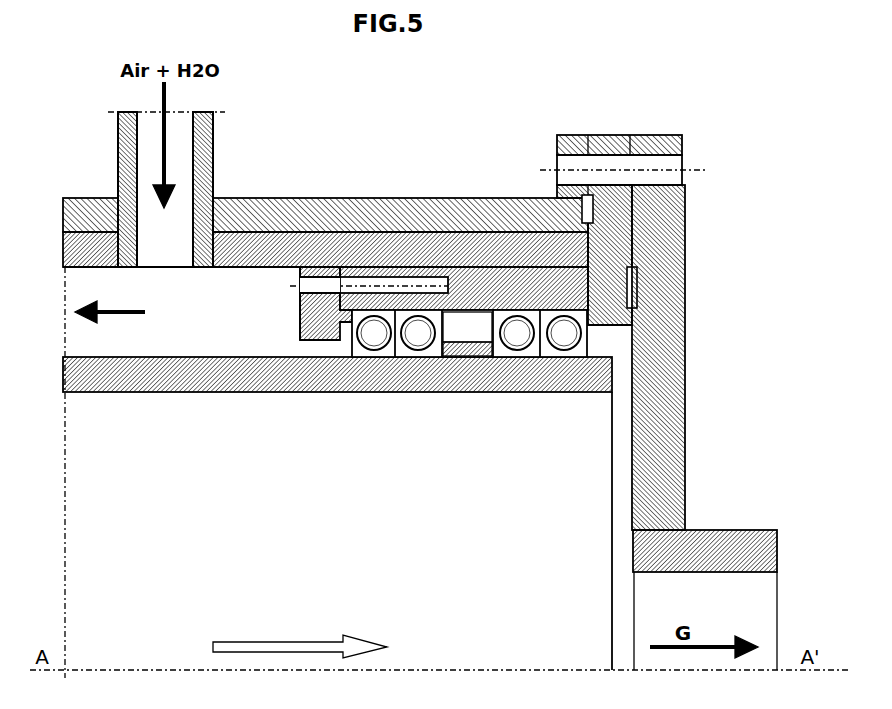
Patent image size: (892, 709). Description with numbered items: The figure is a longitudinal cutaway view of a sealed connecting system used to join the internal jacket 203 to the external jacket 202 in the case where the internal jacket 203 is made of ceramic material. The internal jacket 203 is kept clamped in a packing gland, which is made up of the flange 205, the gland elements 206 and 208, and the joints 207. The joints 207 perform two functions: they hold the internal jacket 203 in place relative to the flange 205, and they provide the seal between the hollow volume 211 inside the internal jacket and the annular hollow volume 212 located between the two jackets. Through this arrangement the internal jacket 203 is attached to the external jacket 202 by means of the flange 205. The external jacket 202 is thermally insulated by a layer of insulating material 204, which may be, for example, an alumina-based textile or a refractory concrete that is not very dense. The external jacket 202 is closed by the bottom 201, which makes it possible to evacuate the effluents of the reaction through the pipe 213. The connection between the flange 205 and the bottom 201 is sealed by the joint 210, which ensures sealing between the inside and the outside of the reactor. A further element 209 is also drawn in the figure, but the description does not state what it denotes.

The bottom 201 is at (667, 392).
The external jacket 202 is at (343, 218).
The internal jacket 203 is at (353, 357).
The layer of insulating material 204 is at (400, 240).
The flange 205 is at (612, 235).
The packing gland element 206 is at (338, 318).
The joints 207 is at (418, 343).
The packing gland element 208 is at (457, 350).
The sensor 209 is at (583, 200).
The joint 210 is at (637, 292).
The hollow volume 211 is at (384, 590).
The annular hollow volume 212 is at (209, 325).
The pipe 213 is at (722, 607).